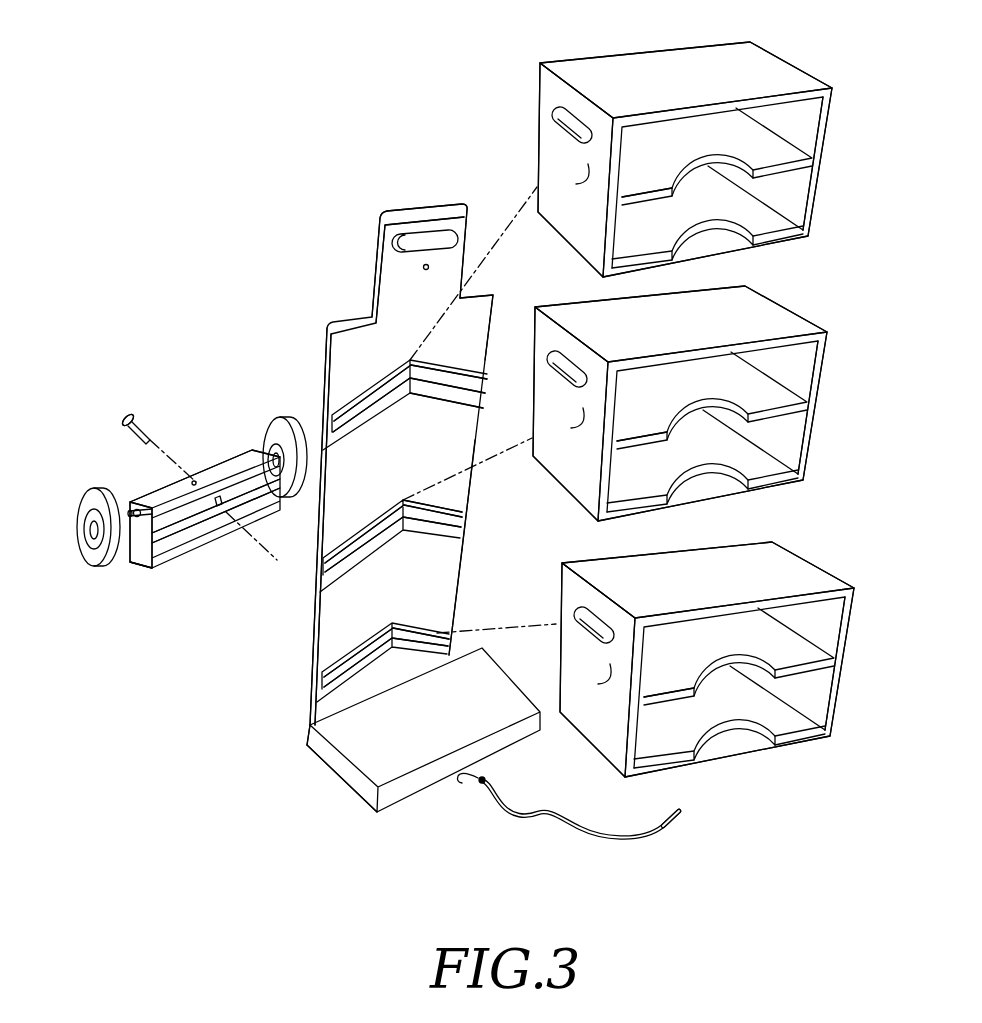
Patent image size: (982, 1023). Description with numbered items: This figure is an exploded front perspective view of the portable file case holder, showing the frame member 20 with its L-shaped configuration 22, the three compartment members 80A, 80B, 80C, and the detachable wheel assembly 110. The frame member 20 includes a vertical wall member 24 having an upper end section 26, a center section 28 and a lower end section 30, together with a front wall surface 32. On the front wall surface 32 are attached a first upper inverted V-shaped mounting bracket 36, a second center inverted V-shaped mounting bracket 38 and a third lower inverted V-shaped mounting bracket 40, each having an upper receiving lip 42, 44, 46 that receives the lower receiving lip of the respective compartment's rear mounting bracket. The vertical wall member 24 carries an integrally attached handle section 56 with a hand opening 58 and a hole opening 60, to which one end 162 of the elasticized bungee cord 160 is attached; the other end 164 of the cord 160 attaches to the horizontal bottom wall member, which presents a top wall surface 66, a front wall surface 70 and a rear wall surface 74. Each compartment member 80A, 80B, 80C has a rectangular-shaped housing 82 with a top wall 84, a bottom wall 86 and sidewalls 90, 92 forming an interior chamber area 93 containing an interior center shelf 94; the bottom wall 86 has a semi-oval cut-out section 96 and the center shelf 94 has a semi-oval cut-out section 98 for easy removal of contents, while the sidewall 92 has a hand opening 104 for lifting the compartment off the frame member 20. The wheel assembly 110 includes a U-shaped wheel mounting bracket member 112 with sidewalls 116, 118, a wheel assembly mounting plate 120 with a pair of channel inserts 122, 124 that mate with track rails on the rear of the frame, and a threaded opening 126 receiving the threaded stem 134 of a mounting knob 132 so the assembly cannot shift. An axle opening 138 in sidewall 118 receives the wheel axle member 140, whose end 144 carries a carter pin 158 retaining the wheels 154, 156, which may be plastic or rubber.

The frame member 20 is at (352, 317).
The L-shaped configuration 22 is at (319, 355).
The vertical wall member 24 is at (474, 308).
The upper end section 26 is at (478, 345).
The center section 28 is at (453, 497).
The lower end section 30 is at (451, 551).
The front wall surface 32 is at (440, 447).
The first upper inverted V-shaped mounting bracket 36 is at (377, 426).
The second center inverted V-shaped mounting bracket 38 is at (385, 547).
The third lower inverted V-shaped mounting bracket 40 is at (368, 638).
The upper receiving lip 42 is at (377, 393).
The upper receiving lip 44 is at (425, 507).
The upper receiving lip 46 is at (412, 624).
The handle section 56 is at (447, 208).
The hand opening 58 is at (392, 250).
The hole opening 60 is at (423, 268).
The top wall surface 66 is at (306, 745).
The front wall surface 70 is at (398, 793).
The rear wall surface 74 is at (343, 763).
The compartment member 80A is at (539, 80).
The compartment member 80B is at (764, 290).
The compartment member 80C is at (755, 539).
The rectangular-shaped housing 82 is at (535, 173).
The top wall 84 is at (658, 95).
The bottom wall 86 is at (640, 248).
The sidewall 90 is at (811, 110).
The sidewall 92 is at (580, 429).
The interior chamber area 93 is at (791, 125).
The interior center shelf 94 is at (646, 172).
The semi-oval cut-out section 96 is at (710, 162).
The semi-oval cut-out section 98 is at (712, 224).
The hand opening 104 is at (561, 130).
The detachable wheel assembly 110 is at (209, 394).
The U-shaped wheel mounting bracket member 112 is at (177, 496).
The sidewall 116 is at (233, 448).
The sidewall 118 is at (139, 509).
The wheel assembly mounting plate 120 is at (150, 561).
The channel insert 122 is at (173, 518).
The channel insert 124 is at (197, 538).
The threaded opening 126 is at (219, 505).
The mounting knob 132 is at (126, 406).
The threaded stem 134 is at (143, 424).
The axle opening 138 is at (136, 520).
The wheel axle member 140 is at (207, 476).
The end 144 is at (93, 544).
The wheel 154 is at (282, 416).
The wheel 156 is at (97, 487).
The carter pin 158 is at (87, 530).
The elasticized (bungee) cord 160 is at (508, 801).
The one end 162 is at (657, 828).
The other end 164 is at (489, 791).